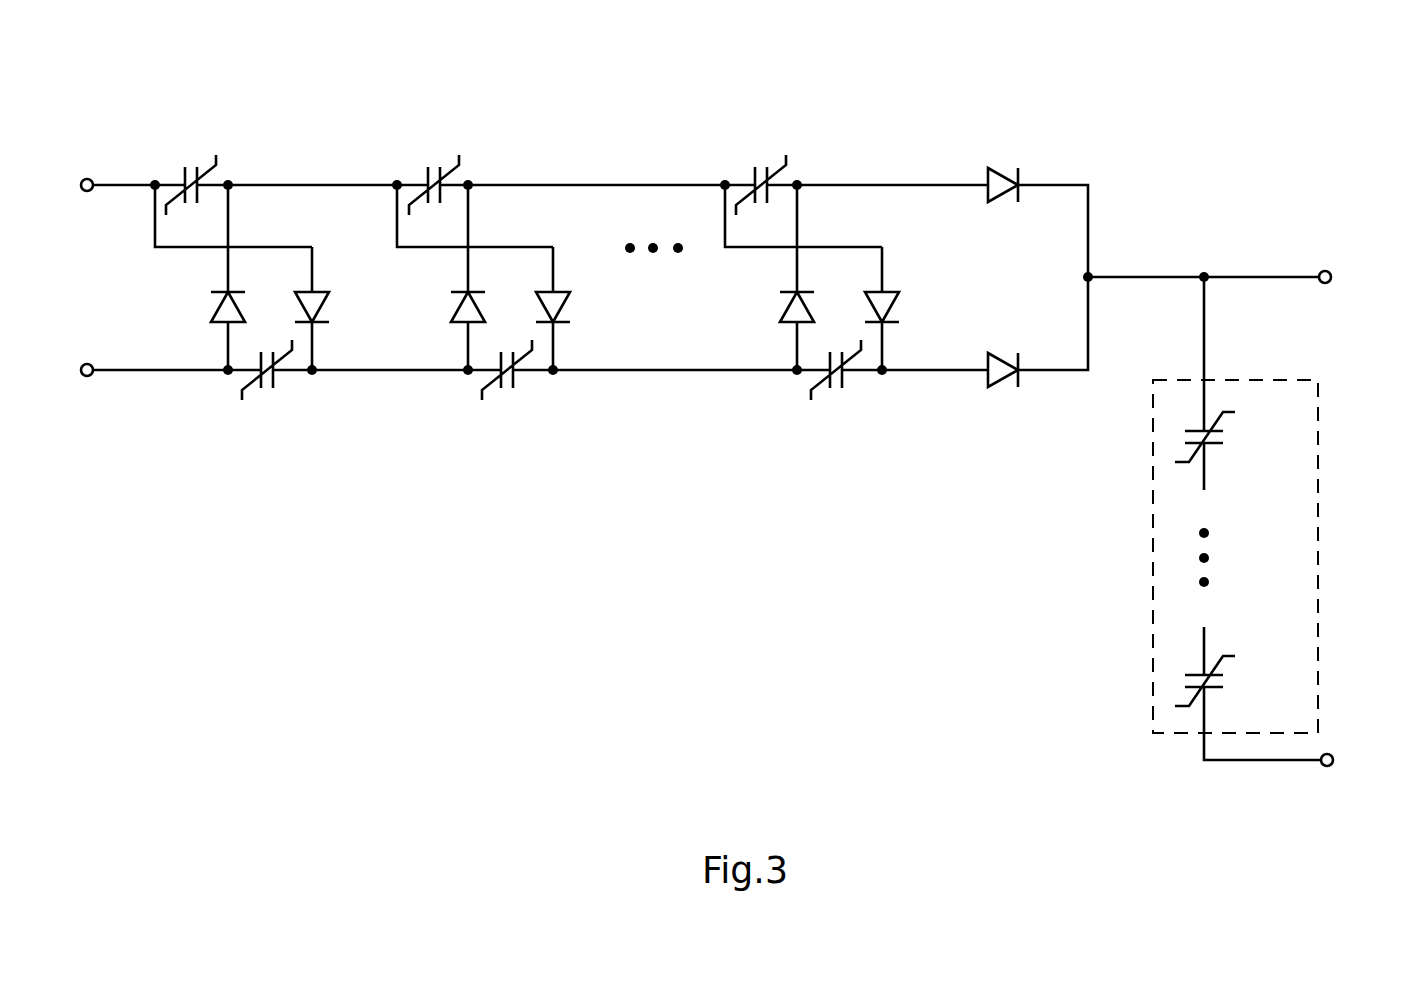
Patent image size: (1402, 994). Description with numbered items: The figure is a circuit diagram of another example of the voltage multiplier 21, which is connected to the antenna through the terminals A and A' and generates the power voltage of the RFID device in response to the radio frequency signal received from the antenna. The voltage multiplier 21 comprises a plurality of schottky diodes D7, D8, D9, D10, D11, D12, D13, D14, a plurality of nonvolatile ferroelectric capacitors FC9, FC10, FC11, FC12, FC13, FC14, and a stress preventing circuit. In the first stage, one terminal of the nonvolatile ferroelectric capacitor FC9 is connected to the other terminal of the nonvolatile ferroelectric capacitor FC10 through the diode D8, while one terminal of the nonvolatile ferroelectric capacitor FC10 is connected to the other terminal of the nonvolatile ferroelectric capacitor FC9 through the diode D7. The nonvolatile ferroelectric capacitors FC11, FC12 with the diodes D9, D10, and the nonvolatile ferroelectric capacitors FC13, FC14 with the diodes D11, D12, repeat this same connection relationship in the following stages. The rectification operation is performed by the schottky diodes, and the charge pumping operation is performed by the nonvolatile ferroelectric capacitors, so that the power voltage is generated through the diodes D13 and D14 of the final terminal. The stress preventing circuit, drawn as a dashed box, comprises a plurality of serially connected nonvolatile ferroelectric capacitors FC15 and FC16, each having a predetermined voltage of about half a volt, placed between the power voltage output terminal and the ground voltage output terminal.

The voltage multiplier 21 is at (741, 388).
The nonvolatile ferroelectric capacitor FC9 is at (191, 172).
The nonvolatile ferroelectric capacitor FC10 is at (271, 386).
The nonvolatile ferroelectric capacitor FC11 is at (429, 172).
The nonvolatile ferroelectric capacitor FC12 is at (512, 386).
The nonvolatile ferroelectric capacitor FC13 is at (757, 172).
The nonvolatile ferroelectric capacitor FC14 is at (841, 386).
The nonvolatile ferroelectric capacitor FC15 is at (1232, 437).
The nonvolatile ferroelectric capacitor FC16 is at (1234, 681).
The schottky diode D7 is at (211, 308).
The schottky diode D8 is at (331, 308).
The schottky diode D9 is at (451, 308).
The schottky diode D10 is at (579, 308).
The schottky diode D11 is at (773, 308).
The schottky diode D12 is at (908, 308).
The schottky diode D13 is at (1006, 205).
The schottky diode D14 is at (1006, 389).